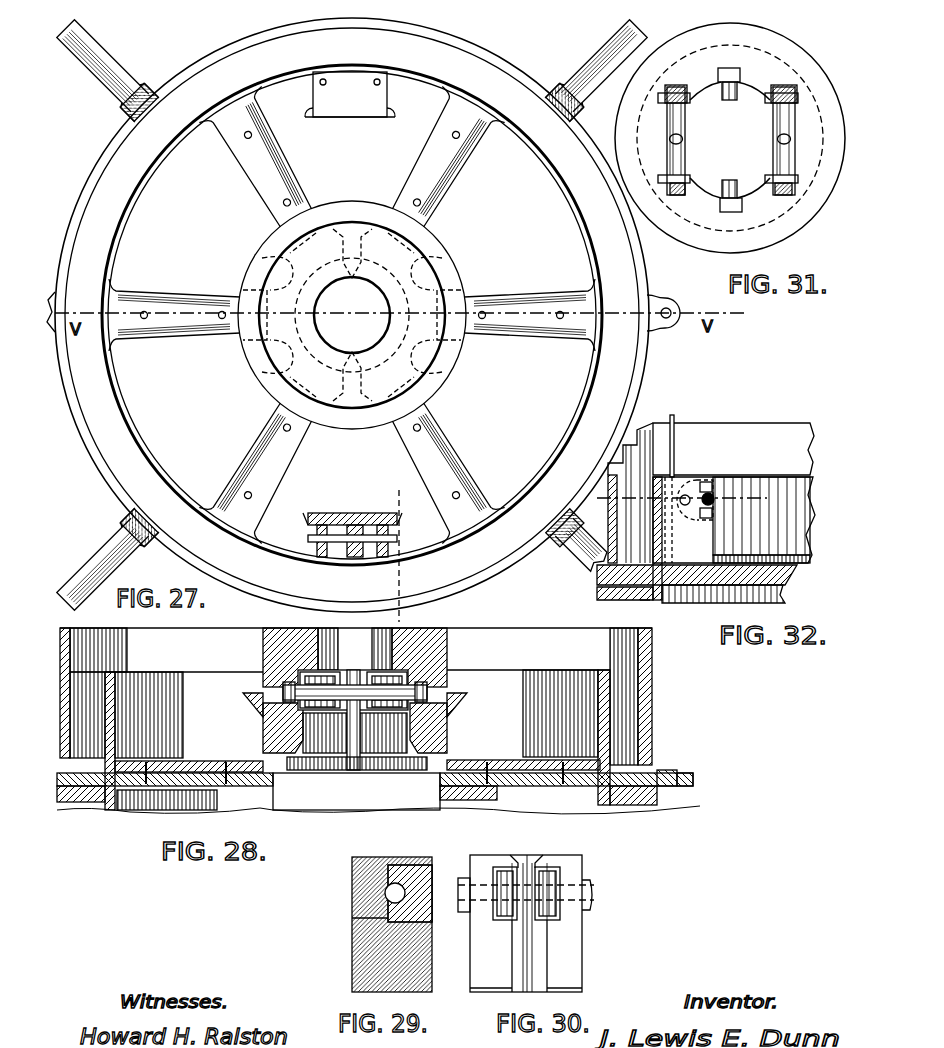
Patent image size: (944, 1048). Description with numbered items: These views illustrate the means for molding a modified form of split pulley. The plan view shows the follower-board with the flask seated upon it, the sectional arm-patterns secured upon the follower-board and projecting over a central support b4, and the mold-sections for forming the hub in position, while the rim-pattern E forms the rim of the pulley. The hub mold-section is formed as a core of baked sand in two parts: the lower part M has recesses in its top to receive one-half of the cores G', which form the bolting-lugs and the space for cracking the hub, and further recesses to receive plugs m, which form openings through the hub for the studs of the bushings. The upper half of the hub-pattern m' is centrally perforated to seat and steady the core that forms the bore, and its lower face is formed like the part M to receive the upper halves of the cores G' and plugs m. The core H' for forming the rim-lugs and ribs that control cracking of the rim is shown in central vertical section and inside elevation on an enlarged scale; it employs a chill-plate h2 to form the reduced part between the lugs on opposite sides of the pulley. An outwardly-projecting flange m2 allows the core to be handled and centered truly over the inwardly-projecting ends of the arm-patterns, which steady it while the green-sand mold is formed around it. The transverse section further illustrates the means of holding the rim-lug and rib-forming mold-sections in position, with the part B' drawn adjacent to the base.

In FIG. 27, the rim-pattern E is at (570, 446).
In FIG. 32, the rim-pattern E is at (654, 600).
In FIG. 28, the rim-pattern E is at (107, 810).
In FIG. 32, the core H' is at (682, 523).
In FIG. 29, the core H' is at (415, 924).
In FIG. 30, the core H' is at (526, 923).
In FIG. 27, the upper half of the hub-pattern m' is at (246, 266).
In FIG. 28, the upper half of the hub-pattern m' is at (372, 657).
In FIG. 27, the outwardly-projecting flange m2 is at (452, 257).
In FIG. 31, the outwardly-projecting flange m2 is at (795, 228).
In FIG. 28, the outwardly-projecting flange m2 is at (258, 697).
In FIG. 31, the plugs m is at (727, 140).
In FIG. 28, the plugs m is at (350, 685).
In FIG. 31, the cores G' is at (744, 114).
In FIG. 28, the cores G' is at (330, 684).
In FIG. 32, the base plate B' is at (687, 540).
In FIG. 28, the base plate B' is at (697, 772).
In FIG. 28, the lower part of the hub mold-section M is at (263, 745).
In FIG. 28, the central support b4 is at (440, 787).
In FIG. 29, the chill-plate h2 is at (437, 870).